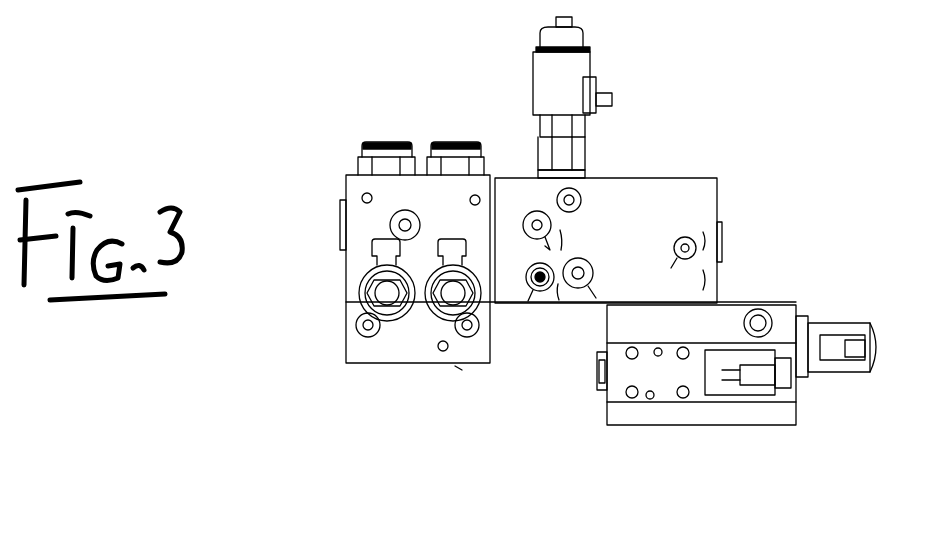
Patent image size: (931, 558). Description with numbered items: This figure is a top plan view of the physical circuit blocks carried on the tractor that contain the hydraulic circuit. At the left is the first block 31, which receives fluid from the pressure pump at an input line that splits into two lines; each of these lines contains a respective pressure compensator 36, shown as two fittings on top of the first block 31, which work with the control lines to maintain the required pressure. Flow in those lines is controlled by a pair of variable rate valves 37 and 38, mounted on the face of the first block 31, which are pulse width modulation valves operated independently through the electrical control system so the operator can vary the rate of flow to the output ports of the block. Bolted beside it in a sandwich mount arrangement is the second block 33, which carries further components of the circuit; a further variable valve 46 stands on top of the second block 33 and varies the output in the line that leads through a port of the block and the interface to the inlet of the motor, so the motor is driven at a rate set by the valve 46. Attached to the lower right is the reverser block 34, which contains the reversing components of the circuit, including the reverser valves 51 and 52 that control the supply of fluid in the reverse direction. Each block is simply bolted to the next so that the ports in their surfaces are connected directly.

The first block 31 is at (367, 345).
The second block 33 is at (702, 203).
The reverser block 34 is at (693, 413).
The pressure compensator 36 is at (378, 143).
The variable rate valve 37 is at (458, 303).
The variable rate valve 38 is at (372, 300).
The variable valve 46 is at (590, 60).
The reverser valve 51 is at (843, 325).
The reverser valve 52 is at (830, 385).